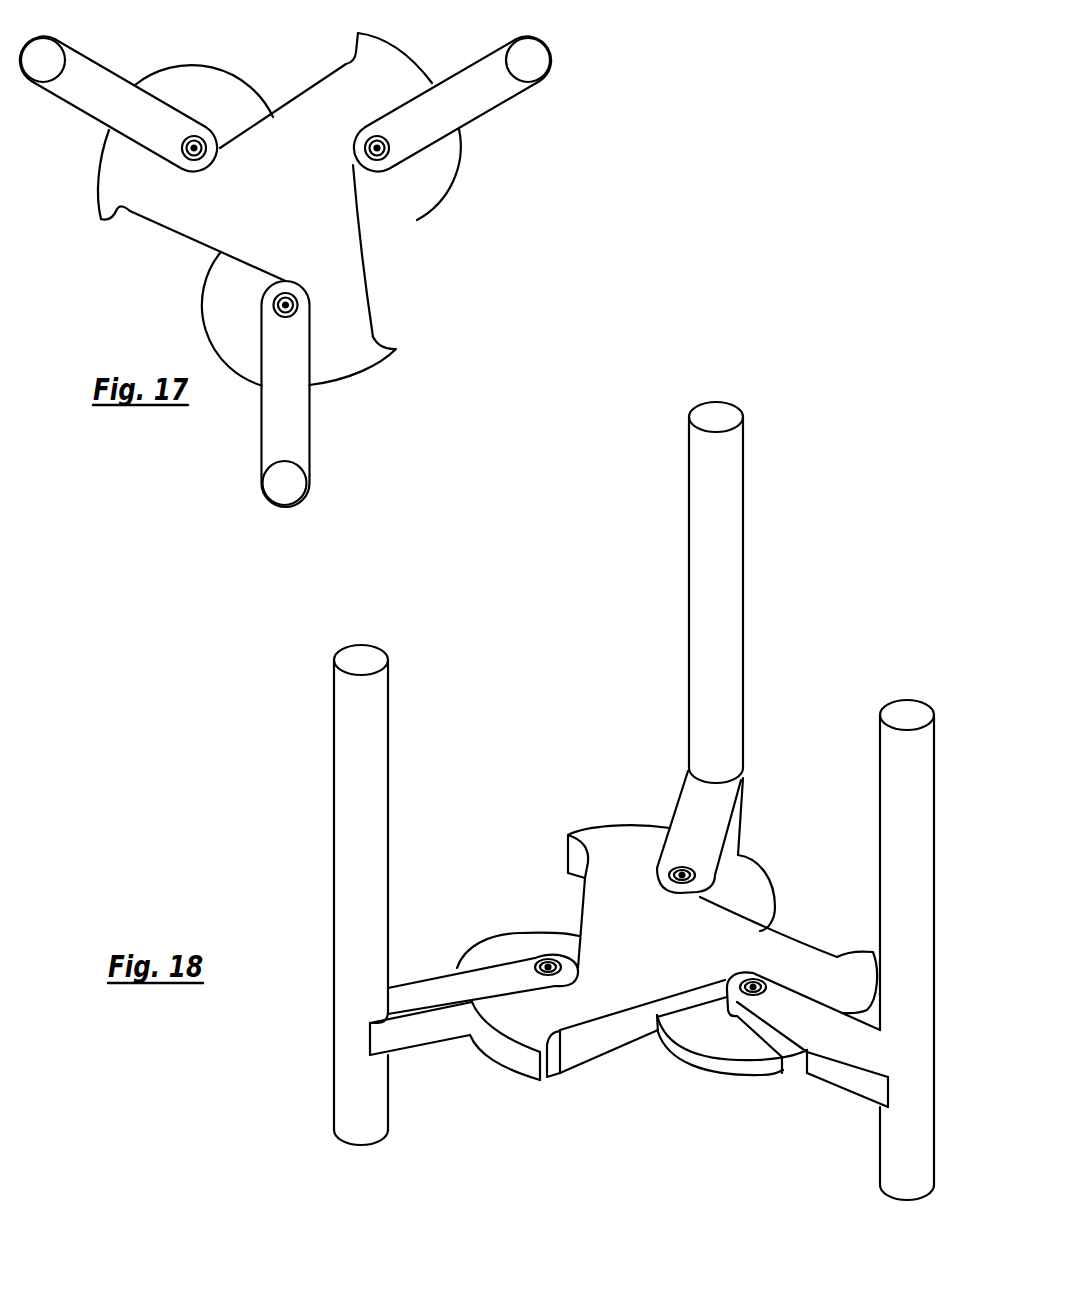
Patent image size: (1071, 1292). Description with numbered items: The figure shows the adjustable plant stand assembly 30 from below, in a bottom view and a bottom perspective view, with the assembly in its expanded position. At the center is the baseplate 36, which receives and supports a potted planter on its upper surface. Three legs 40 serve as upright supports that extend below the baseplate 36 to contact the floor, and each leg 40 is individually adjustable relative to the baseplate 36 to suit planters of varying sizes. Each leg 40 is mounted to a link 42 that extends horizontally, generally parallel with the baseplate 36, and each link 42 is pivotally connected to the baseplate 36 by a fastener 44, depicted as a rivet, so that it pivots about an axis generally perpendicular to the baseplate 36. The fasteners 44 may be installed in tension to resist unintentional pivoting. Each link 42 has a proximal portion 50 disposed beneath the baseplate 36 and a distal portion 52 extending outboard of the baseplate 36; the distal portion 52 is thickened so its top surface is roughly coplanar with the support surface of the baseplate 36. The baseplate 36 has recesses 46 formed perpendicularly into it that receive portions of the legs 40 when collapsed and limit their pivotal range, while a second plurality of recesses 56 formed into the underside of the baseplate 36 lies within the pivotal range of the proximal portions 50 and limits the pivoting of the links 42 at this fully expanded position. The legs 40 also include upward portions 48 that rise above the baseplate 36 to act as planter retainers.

In FIG. 17, the adjustable plant stand assembly 30 is at (432, 270).
In FIG. 18, the adjustable plant stand assembly 30 is at (563, 801).
In FIG. 17, the baseplate 36 is at (264, 212).
In FIG. 18, the baseplate 36 is at (623, 928).
In FIG. 17, the legs 40 is at (292, 495).
In FIG. 18, the legs 40 is at (291, 895).
In FIG. 17, the link 42 is at (470, 113).
In FIG. 18, the link 42 is at (398, 1032).
In FIG. 17, the fastener 44 is at (383, 153).
In FIG. 18, the fastener 44 is at (540, 961).
In FIG. 17, the recesses 46 is at (378, 342).
In FIG. 18, the recesses 46 is at (550, 1057).
In FIG. 18, the upward portions 48 is at (360, 1123).
In FIG. 17, the proximal portion 50 is at (456, 178).
In FIG. 18, the proximal portion 50 is at (376, 983).
In FIG. 17, the distal portion 52 is at (483, 108).
In FIG. 18, the distal portion 52 is at (543, 939).
In FIG. 17, the second plurality of recesses 56 is at (360, 194).
In FIG. 18, the second plurality of recesses 56 is at (690, 1000).